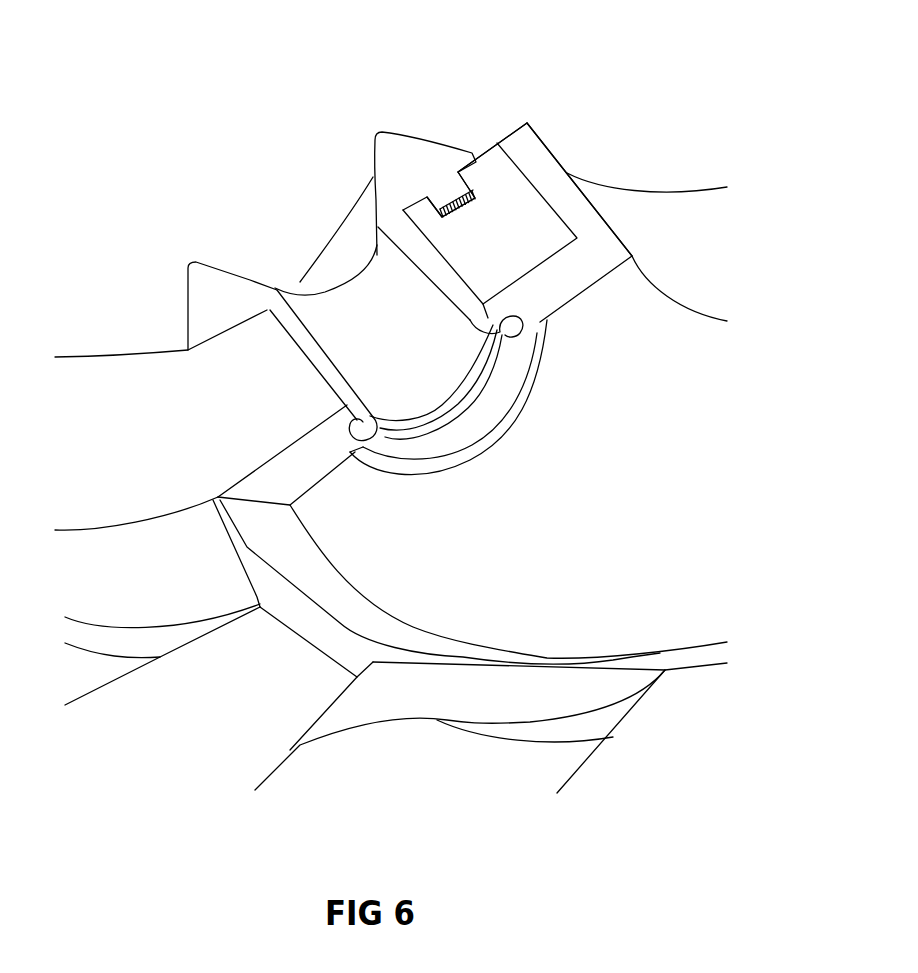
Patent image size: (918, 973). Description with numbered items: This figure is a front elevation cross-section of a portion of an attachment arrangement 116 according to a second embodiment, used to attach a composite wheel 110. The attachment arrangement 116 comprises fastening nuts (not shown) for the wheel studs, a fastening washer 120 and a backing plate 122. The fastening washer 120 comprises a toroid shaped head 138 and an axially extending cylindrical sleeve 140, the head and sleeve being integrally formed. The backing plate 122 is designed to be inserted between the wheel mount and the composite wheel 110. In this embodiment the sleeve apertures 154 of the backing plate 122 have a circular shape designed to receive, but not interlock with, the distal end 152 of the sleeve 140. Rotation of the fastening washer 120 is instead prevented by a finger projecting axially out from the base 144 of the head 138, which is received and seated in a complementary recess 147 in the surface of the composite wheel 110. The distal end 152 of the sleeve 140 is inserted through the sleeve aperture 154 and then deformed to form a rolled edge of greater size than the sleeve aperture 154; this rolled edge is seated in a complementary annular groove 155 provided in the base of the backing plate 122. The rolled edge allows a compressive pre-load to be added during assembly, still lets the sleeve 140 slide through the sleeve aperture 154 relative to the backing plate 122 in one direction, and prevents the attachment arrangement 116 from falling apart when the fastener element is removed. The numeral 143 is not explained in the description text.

The composite wheel 110 is at (182, 441).
The attachment arrangement 116 is at (274, 198).
The fastening washer 120 is at (397, 160).
The backing plate 122 is at (602, 247).
The toroid shaped head 138 is at (200, 285).
The cylindrical sleeve 140 is at (293, 330).
The notch 143 is at (448, 193).
The base of the head 144 is at (469, 168).
The complementary recess 147 is at (467, 192).
The distal end of the sleeve 152 is at (386, 447).
The sleeve aperture 154 is at (355, 420).
The annular groove 155 is at (463, 450).